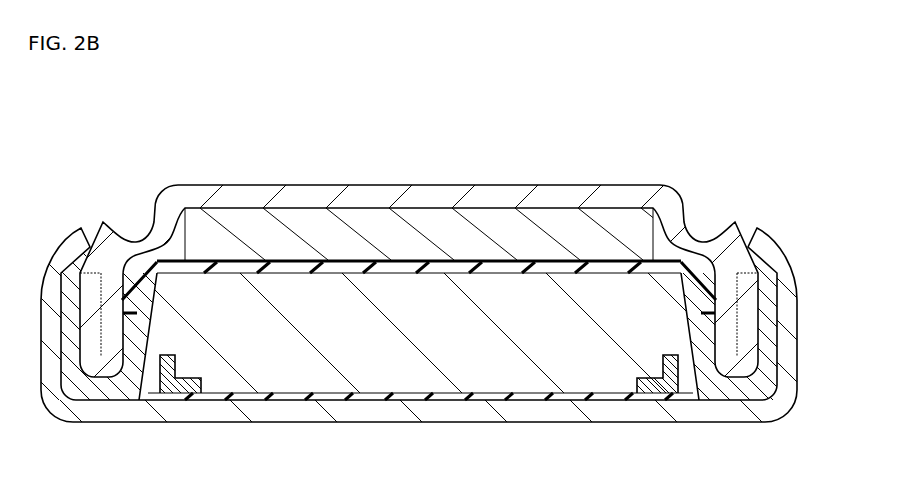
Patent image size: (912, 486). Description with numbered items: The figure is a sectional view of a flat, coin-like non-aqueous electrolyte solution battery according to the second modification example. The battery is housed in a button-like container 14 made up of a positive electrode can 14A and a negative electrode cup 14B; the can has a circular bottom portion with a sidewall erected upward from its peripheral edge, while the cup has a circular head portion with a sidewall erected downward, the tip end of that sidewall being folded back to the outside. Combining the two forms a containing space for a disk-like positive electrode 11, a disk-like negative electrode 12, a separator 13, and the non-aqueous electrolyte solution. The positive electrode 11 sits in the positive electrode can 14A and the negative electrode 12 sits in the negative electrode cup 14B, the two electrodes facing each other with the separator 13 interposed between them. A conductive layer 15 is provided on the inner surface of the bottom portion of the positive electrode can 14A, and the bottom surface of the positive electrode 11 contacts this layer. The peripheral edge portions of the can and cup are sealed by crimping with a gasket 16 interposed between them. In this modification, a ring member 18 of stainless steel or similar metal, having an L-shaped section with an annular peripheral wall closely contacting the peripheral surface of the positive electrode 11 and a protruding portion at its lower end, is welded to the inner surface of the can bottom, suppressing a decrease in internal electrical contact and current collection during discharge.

The positive electrode 11 is at (371, 375).
The negative electrode 12 is at (373, 227).
The separator 13 is at (450, 268).
The container 14 is at (456, 303).
The positive electrode can 14A is at (797, 301).
The negative electrode cup 14B is at (687, 210).
The conductive layer 15 is at (449, 396).
The gasket 16 is at (727, 390).
The ring member 18 is at (673, 378).